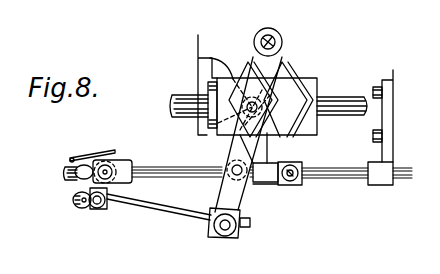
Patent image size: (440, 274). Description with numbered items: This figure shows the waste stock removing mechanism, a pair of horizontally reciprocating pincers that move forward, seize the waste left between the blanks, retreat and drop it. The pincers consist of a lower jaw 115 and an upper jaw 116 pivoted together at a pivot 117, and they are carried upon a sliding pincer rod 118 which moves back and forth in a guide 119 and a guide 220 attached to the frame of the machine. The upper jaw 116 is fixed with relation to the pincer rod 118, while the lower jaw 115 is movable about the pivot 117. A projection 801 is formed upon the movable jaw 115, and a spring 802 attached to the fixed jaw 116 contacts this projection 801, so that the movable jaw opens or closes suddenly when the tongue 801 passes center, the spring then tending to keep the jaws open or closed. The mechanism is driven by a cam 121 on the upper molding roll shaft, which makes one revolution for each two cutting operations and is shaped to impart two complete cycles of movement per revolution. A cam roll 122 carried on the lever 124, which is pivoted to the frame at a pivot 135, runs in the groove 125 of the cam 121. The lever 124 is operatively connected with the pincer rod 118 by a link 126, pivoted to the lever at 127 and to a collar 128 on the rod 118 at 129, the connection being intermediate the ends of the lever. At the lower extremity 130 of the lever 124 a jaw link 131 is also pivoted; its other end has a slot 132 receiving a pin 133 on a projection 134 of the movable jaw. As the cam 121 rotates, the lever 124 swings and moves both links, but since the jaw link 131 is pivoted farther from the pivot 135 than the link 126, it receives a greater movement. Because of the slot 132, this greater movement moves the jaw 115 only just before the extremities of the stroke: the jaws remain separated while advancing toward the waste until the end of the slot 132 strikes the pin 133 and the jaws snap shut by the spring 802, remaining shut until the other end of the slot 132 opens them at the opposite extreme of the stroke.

The lower jaw 115 is at (85, 176).
The upper jaw 116 is at (70, 159).
The pivot 117 is at (108, 170).
The sliding pincer rod 118 is at (220, 175).
The guide 119 is at (259, 187).
The cam 121 is at (302, 80).
The cam roll 122 is at (292, 63).
The lever 124 is at (252, 52).
The groove 125 is at (283, 110).
The link 126 is at (267, 172).
The pivot 127 is at (233, 170).
The collar 128 is at (281, 184).
The pivot 129 is at (303, 178).
The lower extremity 130 is at (224, 227).
The jaw link 131 is at (183, 218).
The slot 132 is at (78, 203).
The pin 133 is at (97, 209).
The projection 134 is at (107, 188).
The pivot 135 is at (270, 40).
The guide 220 is at (378, 186).
The projection 801 is at (112, 157).
The spring 802 is at (102, 148).